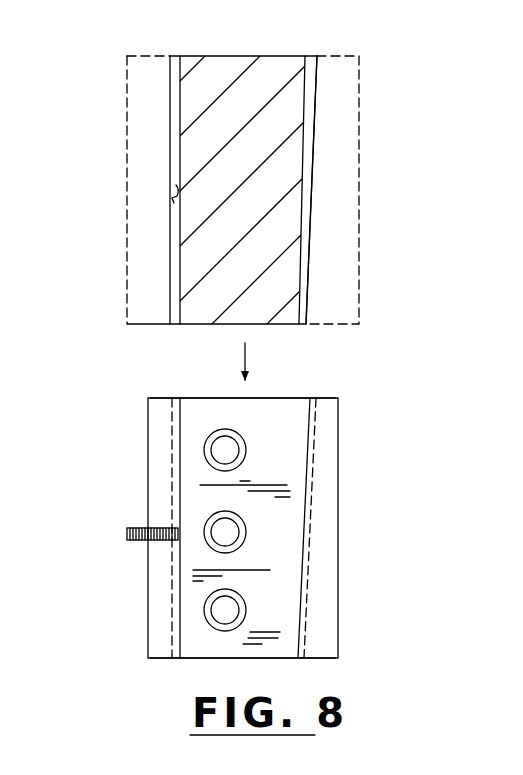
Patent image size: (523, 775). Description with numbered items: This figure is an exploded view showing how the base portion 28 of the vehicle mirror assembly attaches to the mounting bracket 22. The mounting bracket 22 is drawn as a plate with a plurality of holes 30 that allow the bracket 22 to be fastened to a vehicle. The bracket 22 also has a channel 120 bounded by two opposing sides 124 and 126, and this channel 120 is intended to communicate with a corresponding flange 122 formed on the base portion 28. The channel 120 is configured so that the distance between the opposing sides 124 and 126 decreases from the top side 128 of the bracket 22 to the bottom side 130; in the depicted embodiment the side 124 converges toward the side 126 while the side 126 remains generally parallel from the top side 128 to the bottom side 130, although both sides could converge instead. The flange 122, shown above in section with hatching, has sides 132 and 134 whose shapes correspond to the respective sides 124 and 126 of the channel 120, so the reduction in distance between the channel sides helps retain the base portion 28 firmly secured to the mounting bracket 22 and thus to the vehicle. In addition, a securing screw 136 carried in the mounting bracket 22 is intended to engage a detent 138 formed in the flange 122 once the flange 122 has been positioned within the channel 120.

The mounting bracket 22 is at (240, 528).
The base portion 28 is at (309, 280).
The holes 30 is at (205, 522).
The channel 120 is at (293, 445).
The flange 122 is at (287, 183).
The side 124 is at (305, 528).
The side 126 is at (181, 574).
The top side 128 is at (293, 398).
The bottom side 130 is at (273, 659).
The side 132 is at (310, 207).
The side 134 is at (176, 222).
The securing screw 136 is at (127, 530).
The detent 138 is at (175, 188).